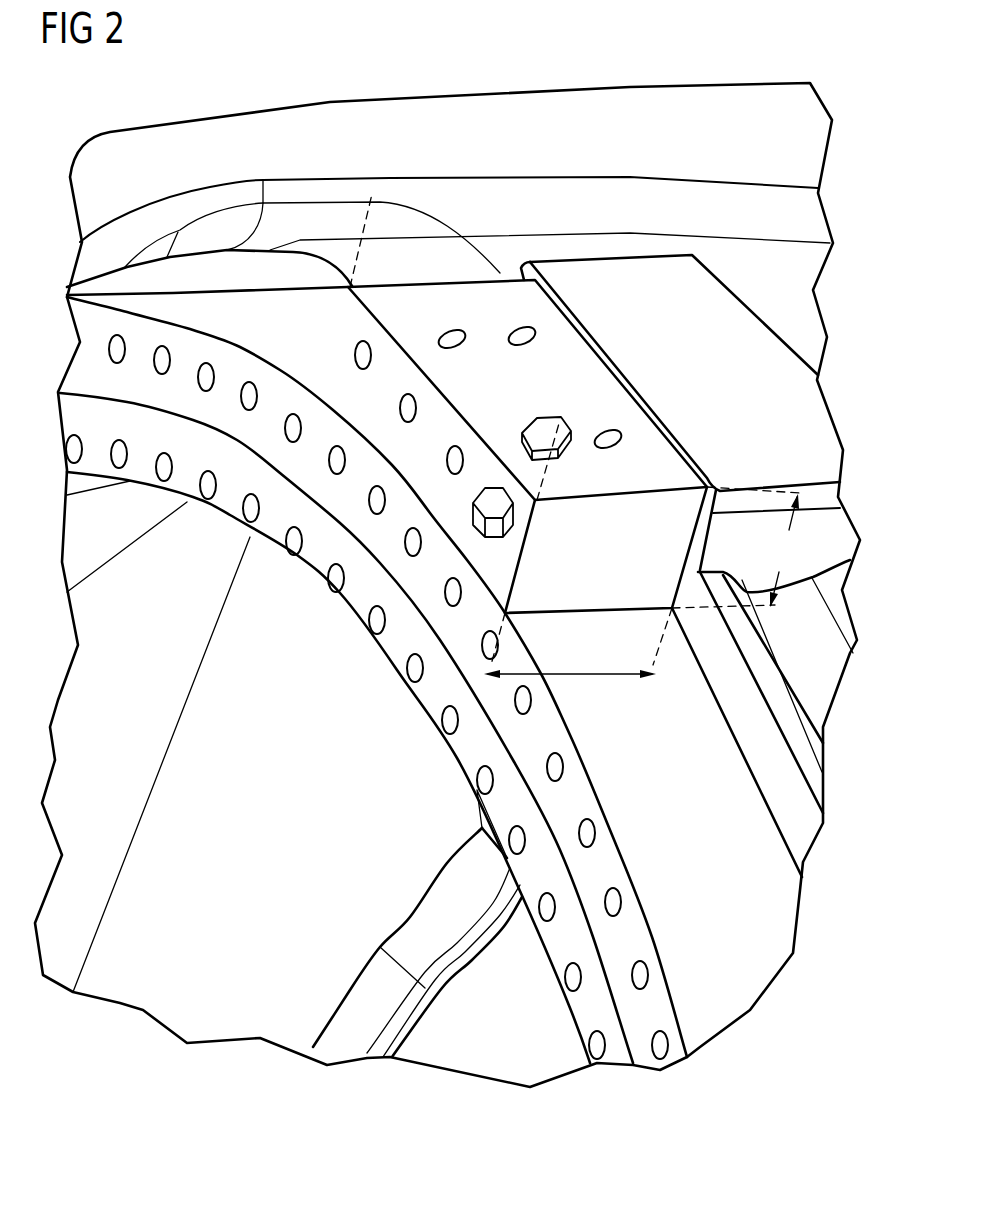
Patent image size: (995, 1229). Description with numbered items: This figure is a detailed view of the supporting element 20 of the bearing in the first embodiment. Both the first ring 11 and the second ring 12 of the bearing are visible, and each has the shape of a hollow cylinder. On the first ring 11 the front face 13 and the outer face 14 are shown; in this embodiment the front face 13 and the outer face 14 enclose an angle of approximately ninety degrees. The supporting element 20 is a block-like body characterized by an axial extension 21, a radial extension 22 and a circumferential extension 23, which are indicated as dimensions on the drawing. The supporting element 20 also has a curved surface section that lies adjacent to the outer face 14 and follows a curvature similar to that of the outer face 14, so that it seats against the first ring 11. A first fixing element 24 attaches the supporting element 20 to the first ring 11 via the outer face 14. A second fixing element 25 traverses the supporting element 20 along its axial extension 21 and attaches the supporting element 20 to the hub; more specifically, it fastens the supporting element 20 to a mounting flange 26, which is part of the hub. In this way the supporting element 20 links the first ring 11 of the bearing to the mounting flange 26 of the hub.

The first ring 11 is at (373, 680).
The second ring 12 is at (460, 755).
The front face 13 is at (437, 607).
The outer face 14 is at (755, 908).
The supporting element 20 is at (570, 357).
The axial extension 21 is at (578, 643).
The radial extension 22 is at (736, 547).
The circumferential extension 23 is at (556, 404).
The first fixing element 24 is at (543, 426).
The second fixing element 25 is at (485, 521).
The mounting flange 26 is at (745, 326).